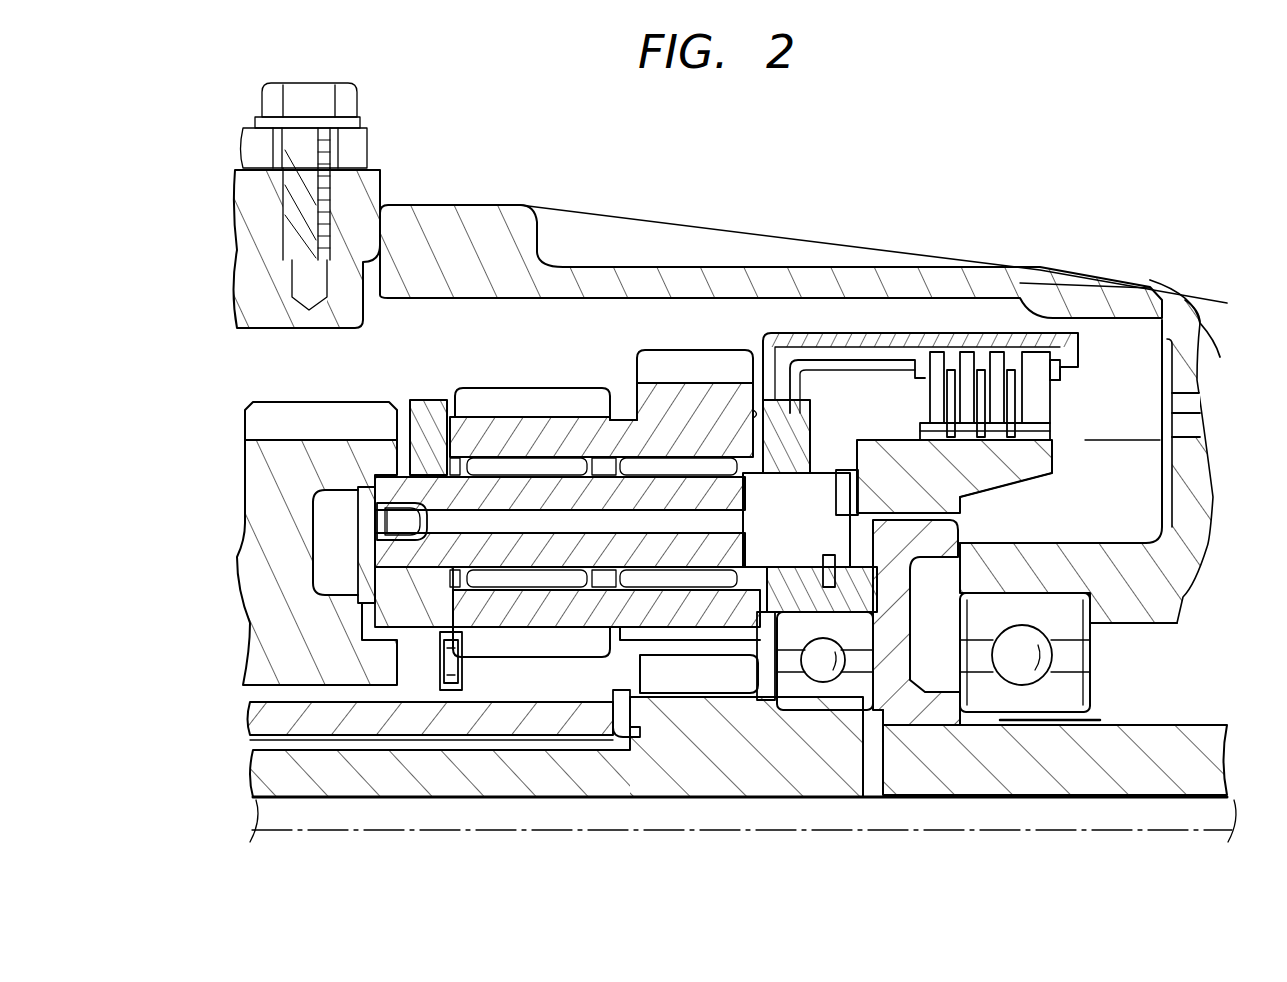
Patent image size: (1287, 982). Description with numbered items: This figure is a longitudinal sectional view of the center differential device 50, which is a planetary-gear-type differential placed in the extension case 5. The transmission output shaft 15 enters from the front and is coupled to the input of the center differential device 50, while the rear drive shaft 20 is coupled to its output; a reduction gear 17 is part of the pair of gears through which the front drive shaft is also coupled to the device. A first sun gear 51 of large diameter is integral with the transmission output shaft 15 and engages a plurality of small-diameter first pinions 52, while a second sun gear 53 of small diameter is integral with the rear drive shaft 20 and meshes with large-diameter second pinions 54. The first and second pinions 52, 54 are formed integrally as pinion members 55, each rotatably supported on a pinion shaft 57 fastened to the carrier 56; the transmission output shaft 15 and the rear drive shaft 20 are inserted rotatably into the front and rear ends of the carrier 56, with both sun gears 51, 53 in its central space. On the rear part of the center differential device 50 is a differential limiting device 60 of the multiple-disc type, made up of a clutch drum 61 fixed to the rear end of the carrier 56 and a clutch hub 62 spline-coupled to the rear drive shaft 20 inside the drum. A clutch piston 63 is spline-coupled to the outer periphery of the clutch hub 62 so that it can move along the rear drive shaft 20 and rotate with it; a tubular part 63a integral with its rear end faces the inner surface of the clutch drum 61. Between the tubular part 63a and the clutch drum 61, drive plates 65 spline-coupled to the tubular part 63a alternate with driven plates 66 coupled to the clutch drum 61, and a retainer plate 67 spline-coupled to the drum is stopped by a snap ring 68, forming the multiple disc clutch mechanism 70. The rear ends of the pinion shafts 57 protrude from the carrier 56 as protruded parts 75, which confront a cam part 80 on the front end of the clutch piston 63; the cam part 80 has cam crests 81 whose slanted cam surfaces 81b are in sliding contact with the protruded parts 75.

The extension case 5 is at (440, 215).
The transmission output shaft 15 is at (403, 727).
The reduction gear 17 is at (316, 415).
The rear drive shaft 20 is at (838, 780).
The center differential device 50 is at (662, 330).
The first sun gear 51 is at (450, 652).
The first pinion 52 is at (565, 400).
The second sun gear 53 is at (767, 680).
The second pinion 54 is at (712, 358).
The pinion member 55 is at (622, 430).
The carrier 56 is at (422, 405).
The pinion shaft 57 is at (497, 490).
The differential limiting device 60 is at (968, 312).
The clutch drum 61 is at (1040, 345).
The clutch hub 62 is at (905, 650).
The clutch piston 63 is at (898, 380).
The tubular part 63a is at (1030, 463).
The drive plate 65 is at (985, 373).
The driven plate 66 is at (1000, 362).
The retainer plate 67 is at (1053, 360).
The snap ring 68 is at (1052, 372).
The multiple disc clutch mechanism 70 is at (1085, 440).
The protruded part 75 is at (812, 493).
The cam part 80 is at (855, 448).
The cam crest 81 is at (870, 443).
The slanted cam surface 81b is at (868, 380).